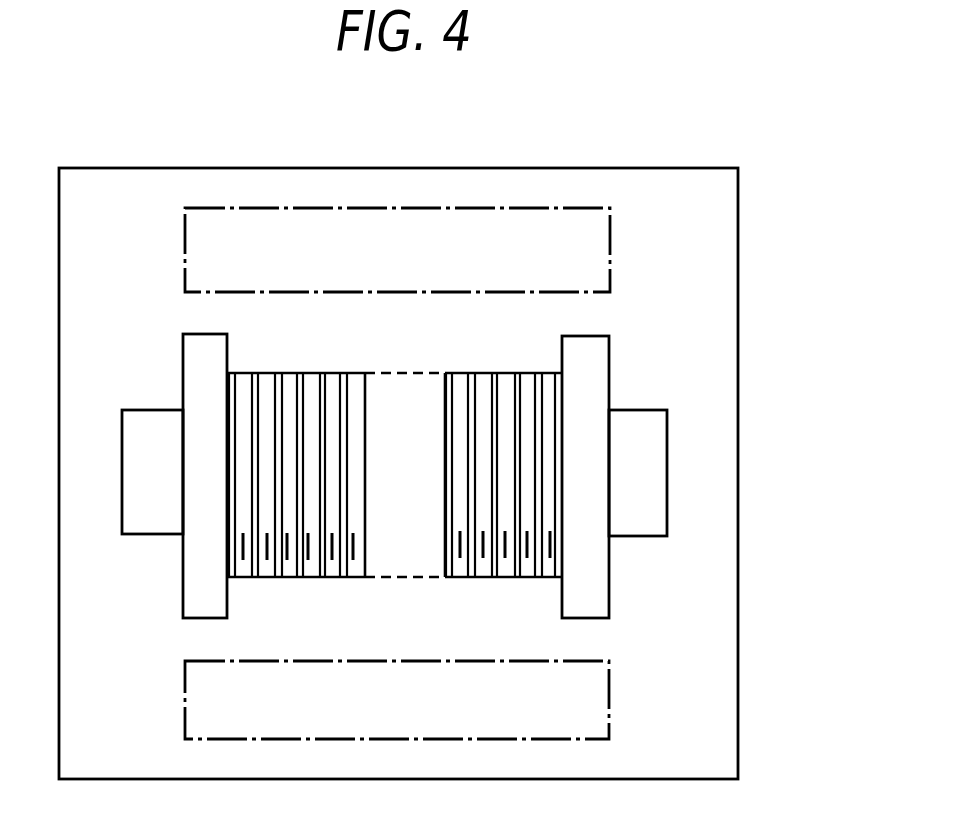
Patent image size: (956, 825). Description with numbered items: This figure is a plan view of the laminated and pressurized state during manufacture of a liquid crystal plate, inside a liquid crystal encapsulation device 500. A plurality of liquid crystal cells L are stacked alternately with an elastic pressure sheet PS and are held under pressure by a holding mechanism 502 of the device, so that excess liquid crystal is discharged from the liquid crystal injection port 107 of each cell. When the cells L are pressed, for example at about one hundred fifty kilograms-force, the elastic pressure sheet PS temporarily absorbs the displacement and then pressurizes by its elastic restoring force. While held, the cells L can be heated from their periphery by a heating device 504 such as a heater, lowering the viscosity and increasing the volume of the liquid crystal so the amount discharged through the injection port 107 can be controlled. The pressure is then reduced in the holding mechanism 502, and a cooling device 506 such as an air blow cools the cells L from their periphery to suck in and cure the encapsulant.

The liquid crystal encapsulation device 500 is at (757, 345).
The holding mechanism 502 is at (143, 535).
The heating device 504 is at (611, 250).
The cooling device 506 is at (609, 697).
The liquid crystal injection port 107 is at (243, 560).
The liquid crystal cell L is at (291, 380).
The elastic pressure sheet PS is at (302, 374).